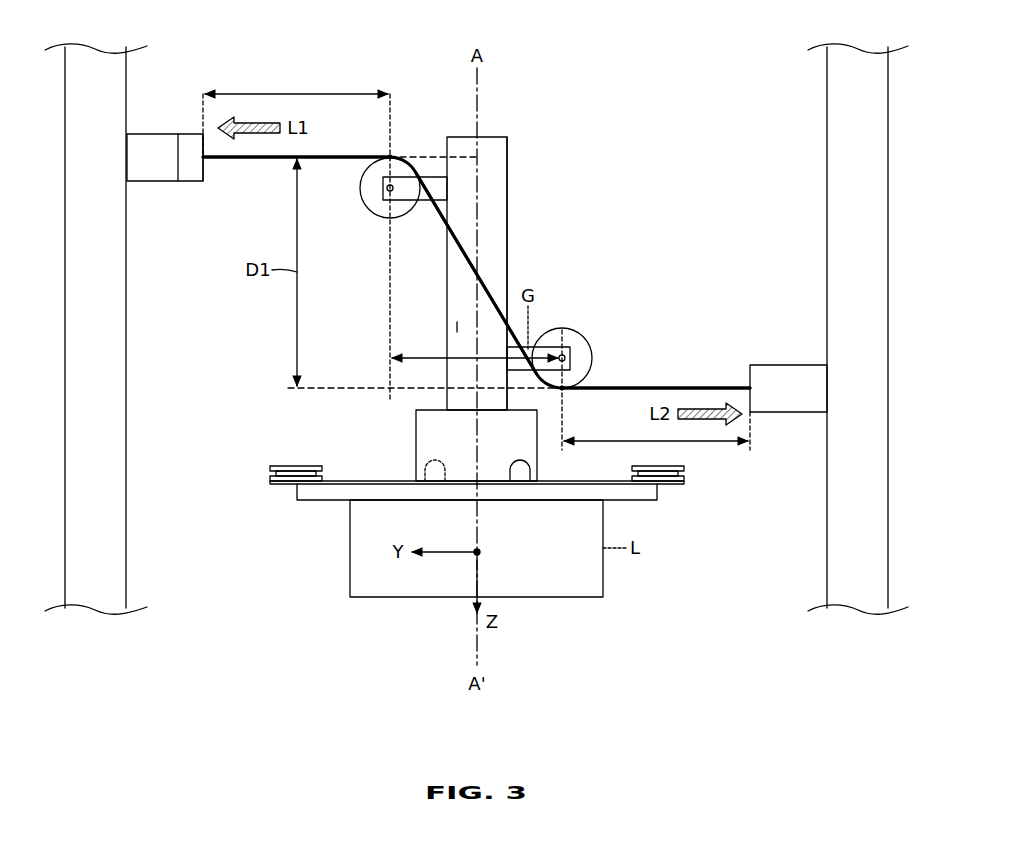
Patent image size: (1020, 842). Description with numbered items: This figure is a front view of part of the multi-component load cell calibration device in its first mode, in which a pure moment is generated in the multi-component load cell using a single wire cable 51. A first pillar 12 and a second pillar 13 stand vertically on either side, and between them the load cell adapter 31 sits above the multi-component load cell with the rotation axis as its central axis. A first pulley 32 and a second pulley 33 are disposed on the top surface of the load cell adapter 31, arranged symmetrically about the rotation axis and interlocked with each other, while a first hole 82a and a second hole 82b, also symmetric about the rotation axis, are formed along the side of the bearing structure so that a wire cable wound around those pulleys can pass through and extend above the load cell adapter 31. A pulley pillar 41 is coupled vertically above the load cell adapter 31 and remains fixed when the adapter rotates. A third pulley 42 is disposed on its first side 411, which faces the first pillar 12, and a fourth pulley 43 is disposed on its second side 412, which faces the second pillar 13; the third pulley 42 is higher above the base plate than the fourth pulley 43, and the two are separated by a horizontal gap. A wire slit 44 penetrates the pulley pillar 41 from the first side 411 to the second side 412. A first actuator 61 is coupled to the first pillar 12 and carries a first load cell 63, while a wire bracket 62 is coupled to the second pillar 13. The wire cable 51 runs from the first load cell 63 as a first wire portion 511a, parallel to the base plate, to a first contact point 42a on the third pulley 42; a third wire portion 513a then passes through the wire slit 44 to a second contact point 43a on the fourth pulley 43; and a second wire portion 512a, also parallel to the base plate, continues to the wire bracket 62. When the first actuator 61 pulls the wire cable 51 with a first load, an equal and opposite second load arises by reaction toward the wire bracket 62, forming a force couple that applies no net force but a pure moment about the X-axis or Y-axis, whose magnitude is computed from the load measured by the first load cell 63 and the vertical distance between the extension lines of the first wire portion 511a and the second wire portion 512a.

The first pillar 12 is at (69, 363).
The second pillar 13 is at (884, 360).
The load cell adapter 31 is at (657, 495).
The first pulley 32 is at (684, 474).
The second pulley 33 is at (270, 474).
The pulley pillar 41 is at (499, 299).
The first side 411 is at (447, 302).
The second side 412 is at (507, 213).
The third pulley 42 is at (360, 188).
The first contact point 42a is at (392, 157).
The fourth pulley 43 is at (562, 328).
The second contact point 43a is at (565, 390).
The wire slit 44 is at (457, 327).
The wire cable 51 is at (476, 249).
The first wire portion 511a is at (345, 156).
The second wire portion 512a is at (660, 387).
The third wire portion 513a is at (450, 252).
The first actuator 61 is at (150, 181).
The wire bracket 62 is at (787, 365).
The first load cell 63 is at (193, 181).
The first hole 82a is at (522, 468).
The second hole 82b is at (430, 468).